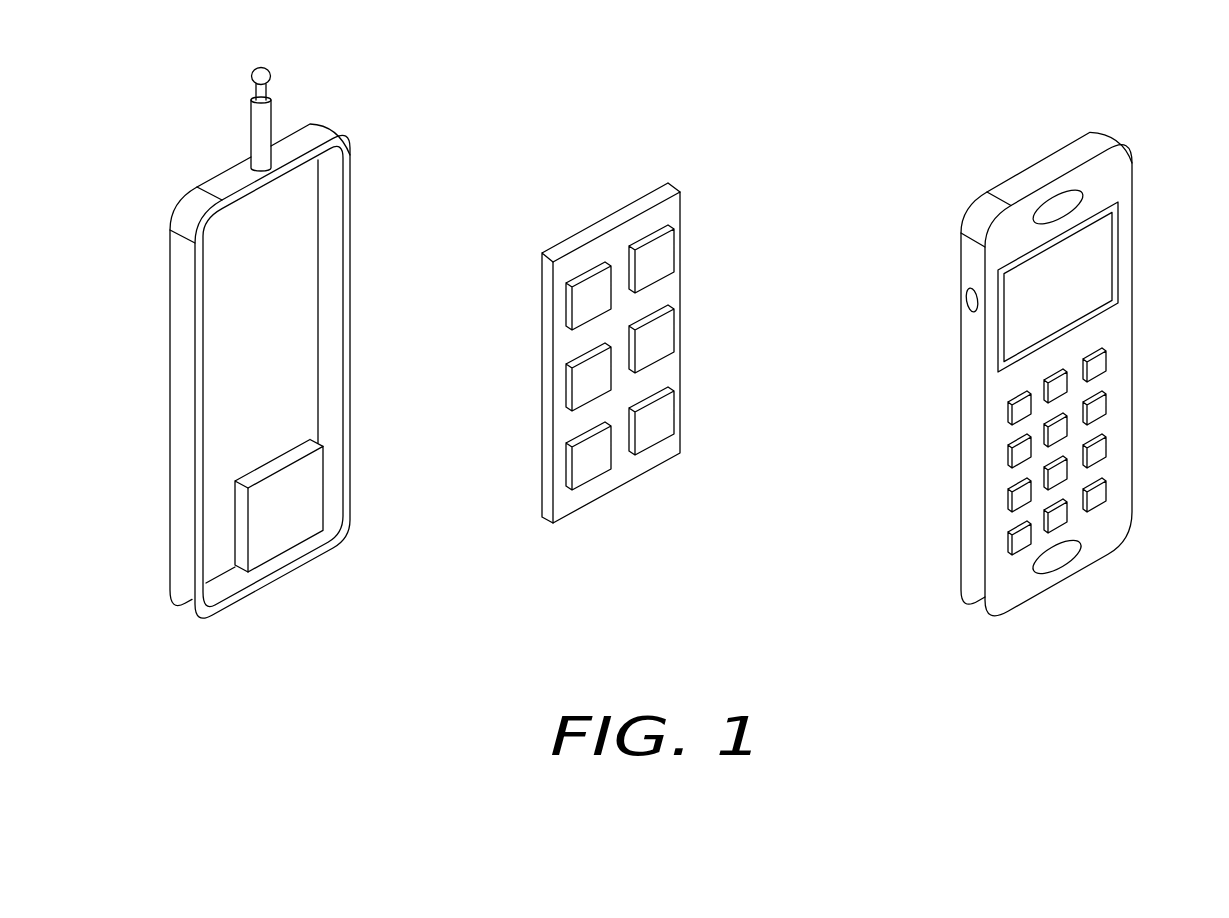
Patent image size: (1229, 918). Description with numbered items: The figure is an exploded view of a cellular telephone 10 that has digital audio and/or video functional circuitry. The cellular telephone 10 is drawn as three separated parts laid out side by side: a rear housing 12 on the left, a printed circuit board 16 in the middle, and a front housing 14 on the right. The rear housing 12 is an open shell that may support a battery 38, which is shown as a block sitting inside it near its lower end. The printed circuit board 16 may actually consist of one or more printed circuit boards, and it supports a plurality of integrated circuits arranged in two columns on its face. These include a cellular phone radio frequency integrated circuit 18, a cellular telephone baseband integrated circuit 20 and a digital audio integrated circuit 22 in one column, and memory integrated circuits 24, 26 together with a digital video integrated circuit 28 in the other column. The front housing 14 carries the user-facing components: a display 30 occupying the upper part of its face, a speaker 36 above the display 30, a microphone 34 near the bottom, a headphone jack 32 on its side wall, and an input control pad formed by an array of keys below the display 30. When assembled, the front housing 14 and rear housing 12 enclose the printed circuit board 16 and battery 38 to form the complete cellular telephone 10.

The cellular telephone 10 is at (874, 60).
The rear housing 12 is at (329, 132).
The front housing 14 is at (1028, 163).
The printed circuit board 16 is at (615, 212).
The cellular phone radio frequency (RF) integrated circuit 18 is at (570, 281).
The cellular telephone baseband (BB) integrated circuit 20 is at (570, 363).
The digital audio integrated circuit 22 is at (570, 440).
The memory integrated circuit 24 is at (660, 223).
The memory integrated circuit 26 is at (657, 307).
The digital video integrated circuit 28 is at (657, 390).
The display 30 is at (1122, 260).
The headphone jack 32 is at (970, 288).
The microphone 34 is at (1082, 547).
The speaker 36 is at (1082, 190).
The battery 38 is at (298, 547).